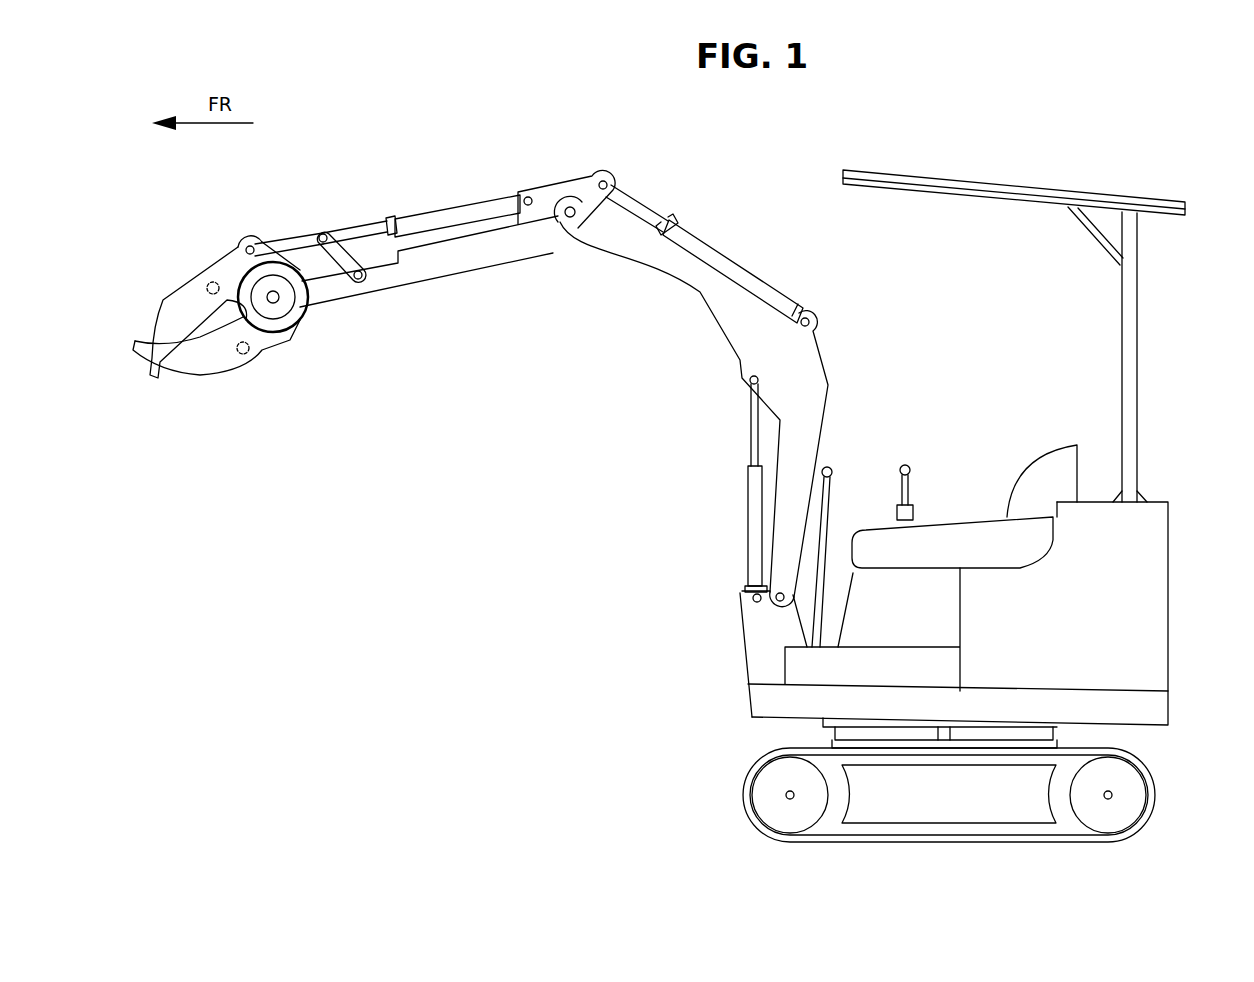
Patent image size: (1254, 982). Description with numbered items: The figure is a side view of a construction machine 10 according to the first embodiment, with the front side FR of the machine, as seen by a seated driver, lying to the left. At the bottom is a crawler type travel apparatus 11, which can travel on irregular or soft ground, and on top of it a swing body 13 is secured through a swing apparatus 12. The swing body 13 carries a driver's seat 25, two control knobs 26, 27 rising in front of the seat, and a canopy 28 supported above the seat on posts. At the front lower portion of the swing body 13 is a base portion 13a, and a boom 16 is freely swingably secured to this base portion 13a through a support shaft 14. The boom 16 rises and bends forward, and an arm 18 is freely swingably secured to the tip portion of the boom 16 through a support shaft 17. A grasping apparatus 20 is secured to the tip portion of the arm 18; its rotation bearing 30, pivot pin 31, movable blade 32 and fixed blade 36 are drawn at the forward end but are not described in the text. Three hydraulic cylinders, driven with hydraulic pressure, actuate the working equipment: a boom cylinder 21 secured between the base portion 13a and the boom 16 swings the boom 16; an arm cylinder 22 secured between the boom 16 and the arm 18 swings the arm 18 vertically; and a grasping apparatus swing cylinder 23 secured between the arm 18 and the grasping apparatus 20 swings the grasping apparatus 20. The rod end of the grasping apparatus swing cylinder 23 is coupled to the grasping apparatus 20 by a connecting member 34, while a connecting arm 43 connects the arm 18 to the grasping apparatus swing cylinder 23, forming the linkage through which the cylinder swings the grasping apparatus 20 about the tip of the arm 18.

The construction machine 10 is at (1071, 173).
The crawler type travel apparatus 11 is at (1155, 792).
The swing apparatus 12 is at (1060, 738).
The swing body 13 is at (1170, 566).
The base portion 13a is at (745, 648).
The support shaft 14 is at (773, 606).
The boom 16 is at (690, 302).
The support shaft 17 is at (553, 233).
The arm 18 is at (448, 262).
The grasping apparatus 20 is at (183, 292).
The boom cylinder 21 is at (753, 496).
The arm cylinder 22 is at (710, 257).
The grasping apparatus swing cylinder 23 is at (442, 215).
The driver's seat 25 is at (970, 518).
The control knob 26 is at (907, 464).
The control knob 27 is at (830, 466).
The canopy 28 is at (931, 177).
The rotation bearing 30 is at (303, 318).
The pivot pin 31 is at (276, 305).
The movable blade 32 is at (207, 364).
The connecting member 34 is at (284, 232).
The fixed blade 36 is at (172, 320).
The connecting arm 43 is at (339, 279).